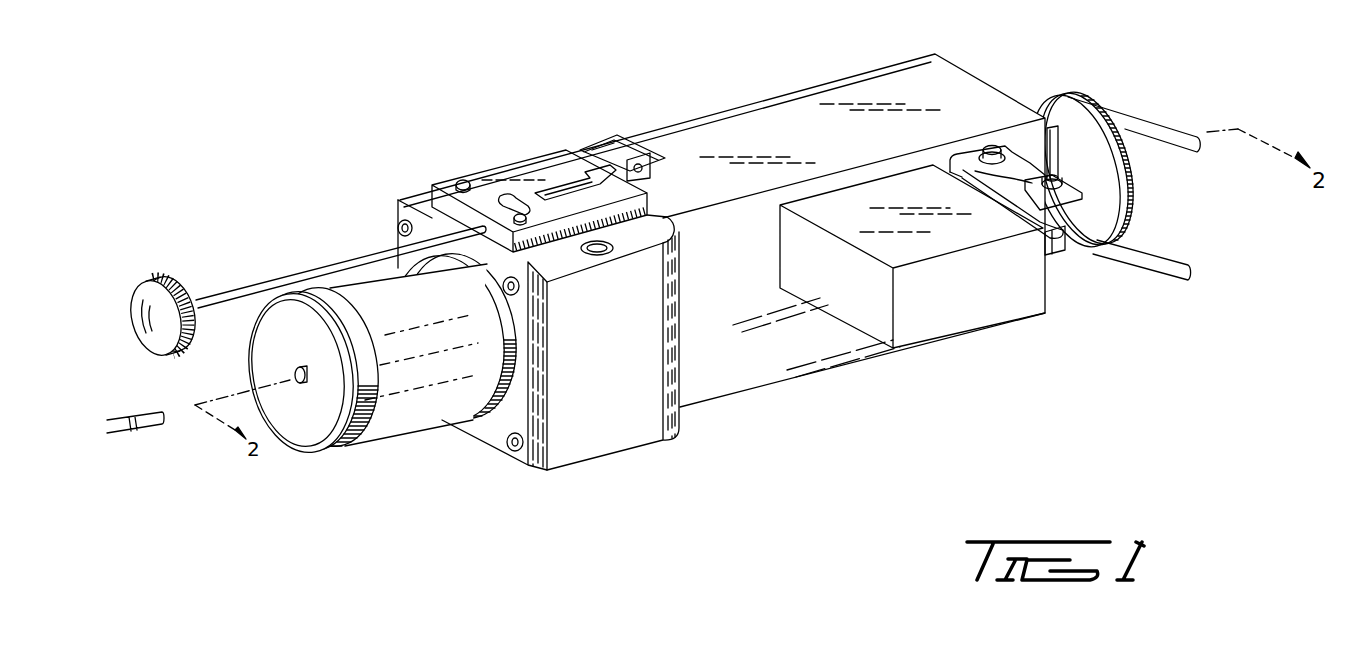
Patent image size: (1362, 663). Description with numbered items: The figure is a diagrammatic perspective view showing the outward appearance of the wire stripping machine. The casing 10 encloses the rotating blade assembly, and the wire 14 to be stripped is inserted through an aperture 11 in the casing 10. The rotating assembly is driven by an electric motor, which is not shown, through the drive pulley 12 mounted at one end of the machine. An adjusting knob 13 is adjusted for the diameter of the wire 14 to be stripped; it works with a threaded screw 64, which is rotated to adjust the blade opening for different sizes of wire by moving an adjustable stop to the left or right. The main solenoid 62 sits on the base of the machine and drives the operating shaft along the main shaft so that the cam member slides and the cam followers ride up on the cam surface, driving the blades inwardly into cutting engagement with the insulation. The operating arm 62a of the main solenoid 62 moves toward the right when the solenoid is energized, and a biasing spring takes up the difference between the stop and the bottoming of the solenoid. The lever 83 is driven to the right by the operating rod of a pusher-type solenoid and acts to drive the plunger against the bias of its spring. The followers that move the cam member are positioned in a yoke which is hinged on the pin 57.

The casing 10 is at (433, 408).
The aperture 11 is at (300, 383).
The drive pulley 12 is at (1135, 191).
The adjusting knob 13 is at (163, 292).
The wire 14 is at (131, 432).
The pin 57 is at (613, 342).
The main solenoid 62 is at (1030, 302).
The operating arm 62a is at (1060, 245).
The threaded screw 64 is at (330, 268).
The lever 83 is at (619, 146).